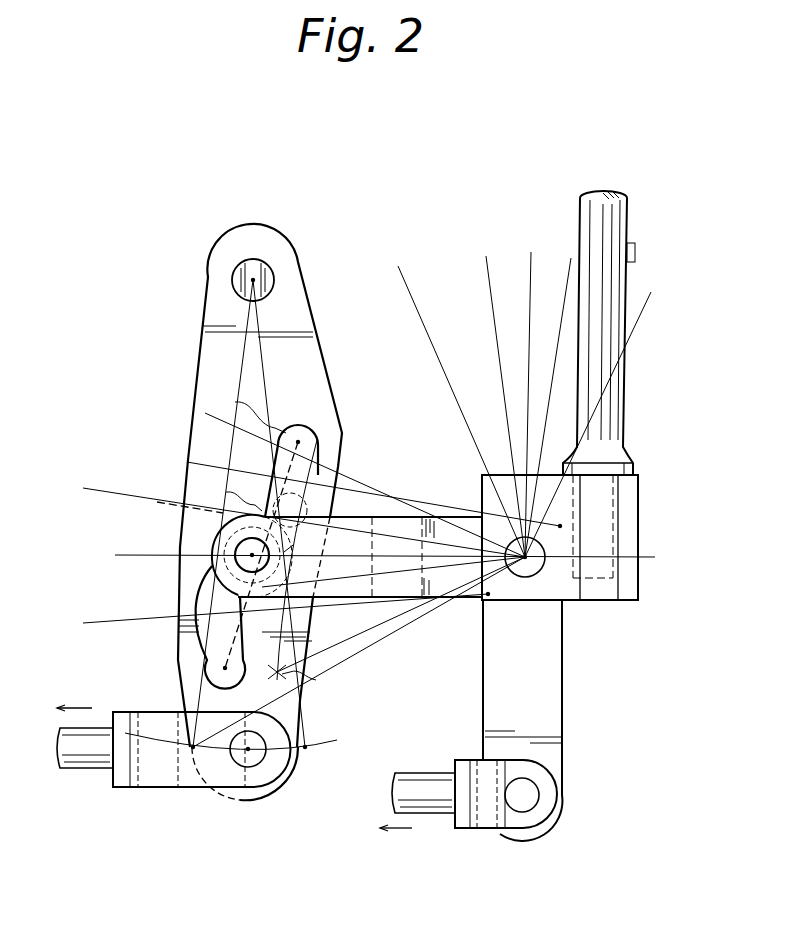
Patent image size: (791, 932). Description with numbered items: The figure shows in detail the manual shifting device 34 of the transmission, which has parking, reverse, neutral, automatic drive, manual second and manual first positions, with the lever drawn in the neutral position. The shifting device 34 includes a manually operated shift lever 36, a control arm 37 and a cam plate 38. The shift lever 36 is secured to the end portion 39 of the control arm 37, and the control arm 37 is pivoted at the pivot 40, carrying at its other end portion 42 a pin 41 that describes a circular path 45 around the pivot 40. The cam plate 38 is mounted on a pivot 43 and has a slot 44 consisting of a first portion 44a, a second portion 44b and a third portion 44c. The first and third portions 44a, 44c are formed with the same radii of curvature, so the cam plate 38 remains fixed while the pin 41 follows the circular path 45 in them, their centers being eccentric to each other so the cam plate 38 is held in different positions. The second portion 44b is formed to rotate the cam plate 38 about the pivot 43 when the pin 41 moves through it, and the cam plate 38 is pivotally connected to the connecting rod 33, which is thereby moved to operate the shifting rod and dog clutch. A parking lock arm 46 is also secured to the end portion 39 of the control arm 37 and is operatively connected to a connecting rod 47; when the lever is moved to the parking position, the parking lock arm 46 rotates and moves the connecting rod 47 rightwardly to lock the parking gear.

The connecting rod 33 is at (91, 766).
The shifting device 34 is at (362, 234).
The shift lever 36 is at (617, 210).
The control arm 37 is at (402, 598).
The cam plate 38 is at (198, 361).
The end portion of the control arm 39 is at (632, 509).
The pivot 40 is at (527, 578).
The pin 41 is at (222, 536).
The other end portion of the control arm 42 is at (213, 559).
The pivot 43 is at (300, 257).
The slot 44 is at (262, 479).
The first portion of the slot 44a is at (343, 463).
The second portion of the slot 44b is at (170, 508).
The third portion of the slot 44c is at (197, 641).
The circular path 45 is at (262, 449).
The parking lock arm 46 is at (552, 723).
The connecting rod 47 is at (438, 801).